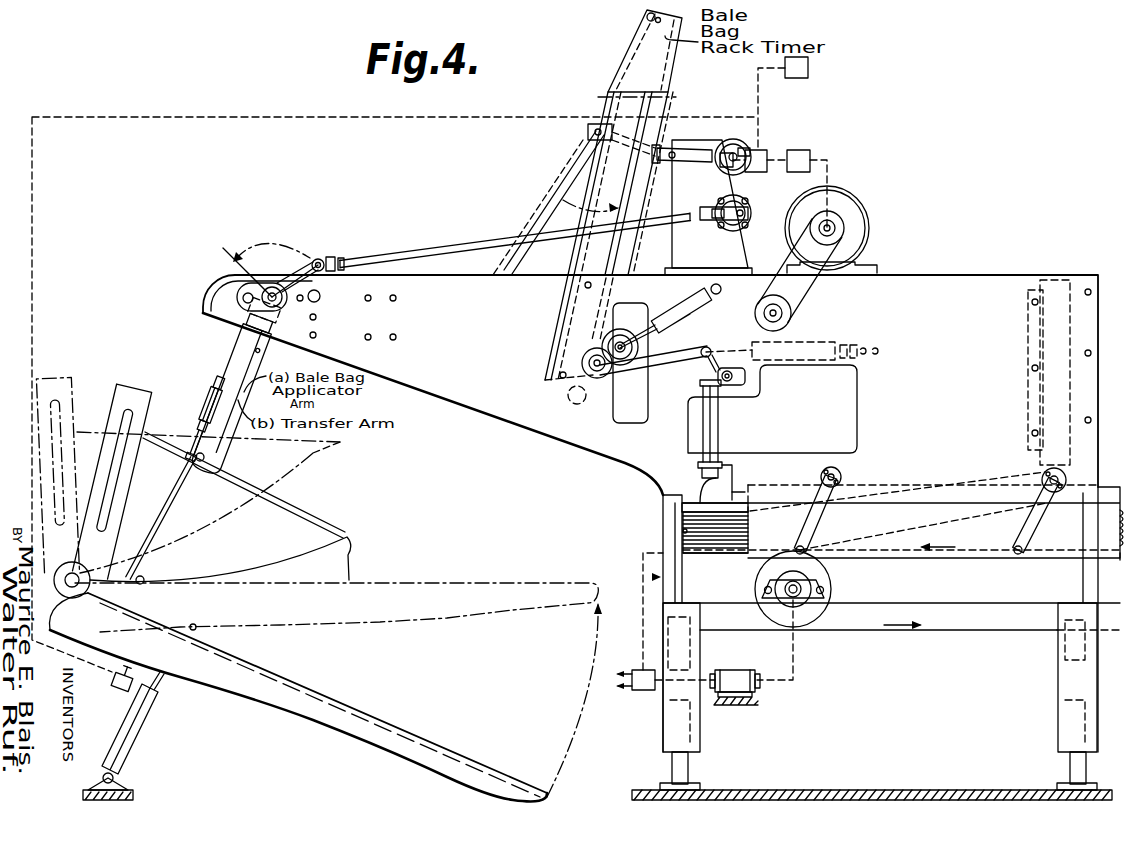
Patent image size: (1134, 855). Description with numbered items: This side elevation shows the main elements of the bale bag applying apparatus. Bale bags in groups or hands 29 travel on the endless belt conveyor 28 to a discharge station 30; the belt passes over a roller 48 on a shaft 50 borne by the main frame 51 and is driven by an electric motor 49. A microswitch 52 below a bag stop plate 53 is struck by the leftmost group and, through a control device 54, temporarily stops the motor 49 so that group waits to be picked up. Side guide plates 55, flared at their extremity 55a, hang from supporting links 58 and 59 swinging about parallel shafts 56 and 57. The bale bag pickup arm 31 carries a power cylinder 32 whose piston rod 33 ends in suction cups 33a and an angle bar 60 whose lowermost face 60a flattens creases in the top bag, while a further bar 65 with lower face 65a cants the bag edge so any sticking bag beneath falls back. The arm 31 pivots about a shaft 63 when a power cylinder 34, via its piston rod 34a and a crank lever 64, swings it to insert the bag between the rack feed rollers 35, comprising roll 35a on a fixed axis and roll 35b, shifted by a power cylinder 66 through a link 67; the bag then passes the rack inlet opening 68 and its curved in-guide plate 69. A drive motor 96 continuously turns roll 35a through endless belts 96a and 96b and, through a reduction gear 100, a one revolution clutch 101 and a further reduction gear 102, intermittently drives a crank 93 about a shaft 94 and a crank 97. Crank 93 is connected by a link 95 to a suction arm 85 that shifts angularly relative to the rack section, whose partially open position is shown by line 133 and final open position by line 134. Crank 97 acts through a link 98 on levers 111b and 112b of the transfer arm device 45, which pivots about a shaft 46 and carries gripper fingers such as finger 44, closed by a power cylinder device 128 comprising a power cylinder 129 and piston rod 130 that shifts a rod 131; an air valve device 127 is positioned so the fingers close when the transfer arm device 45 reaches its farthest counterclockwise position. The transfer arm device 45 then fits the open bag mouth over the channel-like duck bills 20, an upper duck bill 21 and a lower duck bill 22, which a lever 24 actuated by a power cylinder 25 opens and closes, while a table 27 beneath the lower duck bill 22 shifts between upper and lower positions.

The channel-like elements 20 is at (368, 487).
The upper duck bill 21 is at (340, 443).
The lower duck bill 22 is at (349, 560).
The lever 24 is at (1073, 480).
The power cylinder 25 is at (150, 722).
The table 27 is at (396, 582).
The conveyor 28 is at (940, 555).
The groups of bale bags 29 is at (683, 508).
The discharge station 30 is at (745, 556).
The bale bag pickup arm 31 is at (722, 410).
The power cylinder 32 is at (722, 437).
The piston rod 33 is at (700, 462).
The suction cups 33a is at (700, 476).
The power cylinder 34 is at (800, 345).
The piston rod 34a is at (740, 347).
The bale rack feed rollers 35 is at (617, 375).
The rack feed roll 35a is at (585, 360).
The rack feed roll 35b is at (640, 345).
The gripper finger 44 is at (206, 464).
The transfer arm device 45 is at (248, 392).
The shaft 46 is at (272, 290).
The roller 48 is at (772, 605).
The electric motor 49 is at (735, 670).
The shaft 50 is at (810, 578).
The main frame 51 is at (652, 577).
The microswitch 52 is at (693, 555).
The bag stop plate 53 is at (683, 531).
The control device 54 is at (640, 690).
The guide plates 55 is at (885, 490).
The righthand extremity of guide plates 55a is at (1105, 557).
The shaft 56 is at (841, 474).
The shaft 57 is at (1045, 475).
The supporting link 58 is at (825, 520).
The supporting link 59 is at (1015, 530).
The supporting bar 60 is at (692, 478).
The lowermost face of bar 60a is at (740, 512).
The shaft 63 is at (745, 378).
The crank lever 64 is at (700, 358).
The bar 65 is at (735, 462).
The lowermost face of bar 65a is at (740, 490).
The power cylinder 66 is at (704, 272).
The link 67 is at (675, 310).
The inlet opening 68 is at (612, 335).
The curved in-guide plate 69 is at (632, 305).
The suction arm 85 is at (605, 97).
The crank 93 is at (712, 140).
The shaft 94 is at (690, 170).
The link 95 is at (588, 130).
The drive motor 96 is at (870, 220).
The endless belt 96a is at (830, 280).
The endless belt 96b is at (750, 308).
The crank 97 is at (748, 222).
The link 98 is at (476, 248).
The reduction gear 100 is at (800, 150).
The one revolution clutch 101 is at (765, 150).
The further reduction gear 102 is at (724, 150).
The lever 111b is at (295, 281).
The lever 112b is at (312, 260).
The air valve device 127 is at (321, 295).
The power cylinder device 128 is at (201, 390).
The power cylinder 129 is at (210, 378).
The piston rod 130 is at (198, 412).
The rod 131 is at (173, 488).
The partially open position line 133 is at (545, 195).
The final open position 134 is at (560, 150).